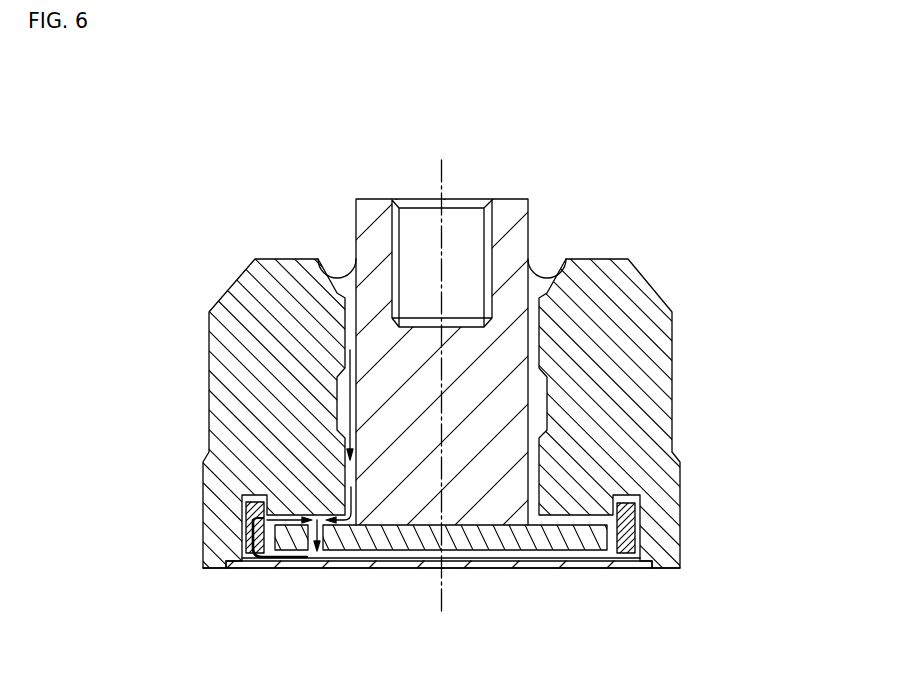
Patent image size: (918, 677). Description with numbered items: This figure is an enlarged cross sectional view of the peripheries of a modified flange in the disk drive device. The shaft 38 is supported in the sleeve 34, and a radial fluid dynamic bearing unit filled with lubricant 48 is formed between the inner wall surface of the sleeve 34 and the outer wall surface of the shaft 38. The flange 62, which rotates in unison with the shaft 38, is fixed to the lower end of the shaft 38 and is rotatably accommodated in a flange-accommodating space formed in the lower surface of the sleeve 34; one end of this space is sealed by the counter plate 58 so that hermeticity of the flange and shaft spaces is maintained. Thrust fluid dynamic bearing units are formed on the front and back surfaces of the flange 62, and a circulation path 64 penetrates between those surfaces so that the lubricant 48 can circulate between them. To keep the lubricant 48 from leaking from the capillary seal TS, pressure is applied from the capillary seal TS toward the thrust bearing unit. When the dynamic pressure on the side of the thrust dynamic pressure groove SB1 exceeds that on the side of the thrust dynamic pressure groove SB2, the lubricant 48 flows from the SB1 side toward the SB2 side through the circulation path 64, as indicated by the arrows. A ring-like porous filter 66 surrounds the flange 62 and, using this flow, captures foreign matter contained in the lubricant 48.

The sleeve 34 is at (657, 317).
The shaft 38 is at (511, 213).
The lubricant 48 is at (346, 287).
The capillary seal TS is at (546, 275).
The counter plate 58 is at (608, 568).
The flange 62 is at (540, 535).
The circulation path 64 is at (307, 534).
The porous filter 66 is at (248, 517).
The thrust dynamic pressure groove SB1 is at (565, 521).
The thrust dynamic pressure groove SB2 is at (372, 554).